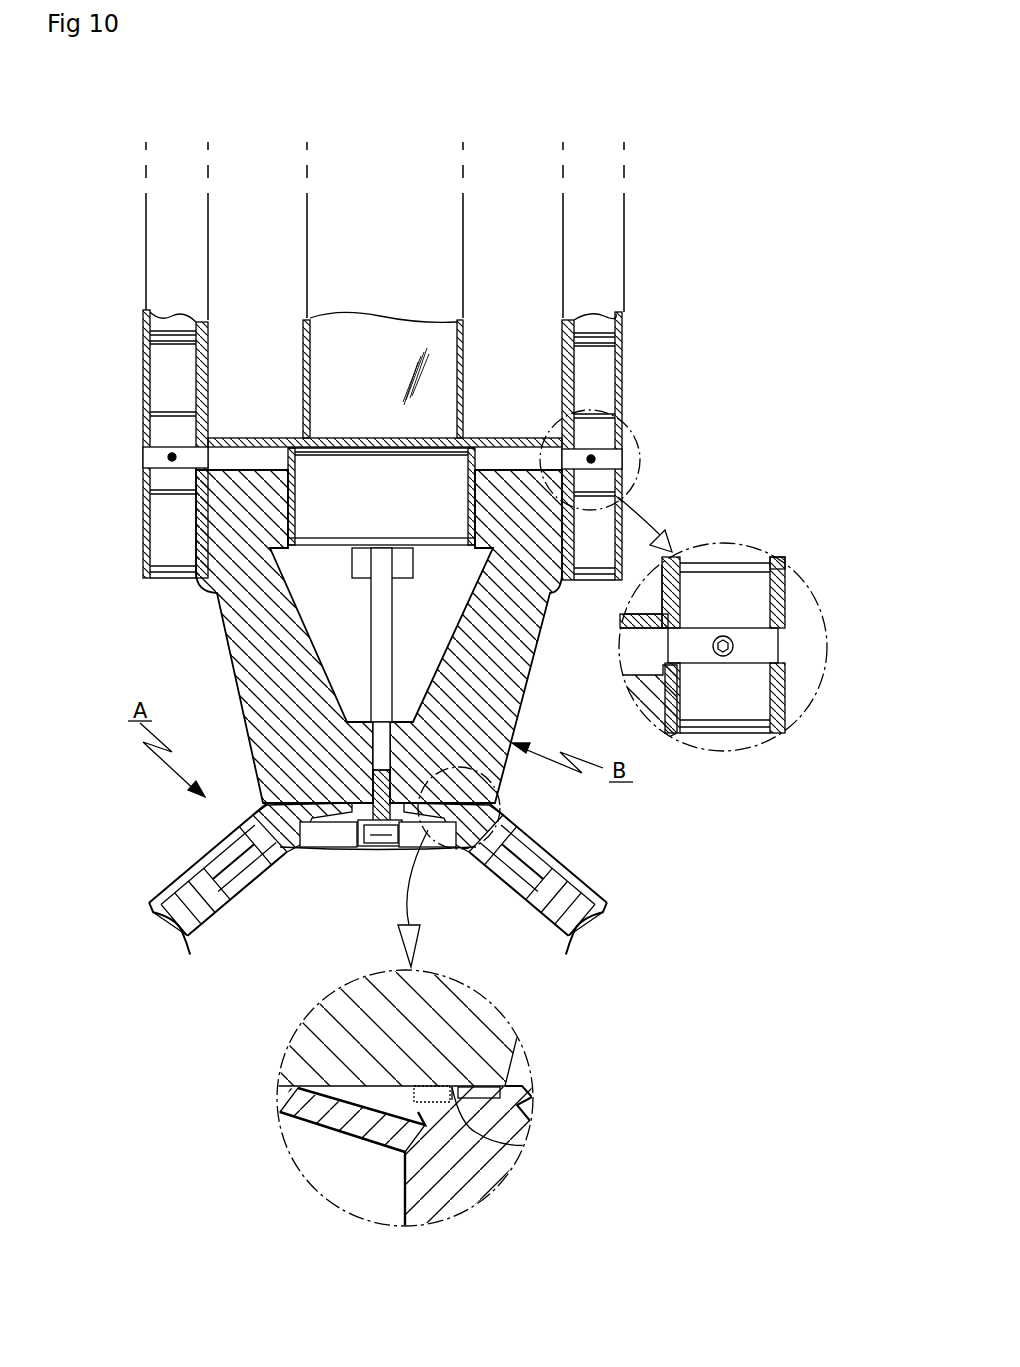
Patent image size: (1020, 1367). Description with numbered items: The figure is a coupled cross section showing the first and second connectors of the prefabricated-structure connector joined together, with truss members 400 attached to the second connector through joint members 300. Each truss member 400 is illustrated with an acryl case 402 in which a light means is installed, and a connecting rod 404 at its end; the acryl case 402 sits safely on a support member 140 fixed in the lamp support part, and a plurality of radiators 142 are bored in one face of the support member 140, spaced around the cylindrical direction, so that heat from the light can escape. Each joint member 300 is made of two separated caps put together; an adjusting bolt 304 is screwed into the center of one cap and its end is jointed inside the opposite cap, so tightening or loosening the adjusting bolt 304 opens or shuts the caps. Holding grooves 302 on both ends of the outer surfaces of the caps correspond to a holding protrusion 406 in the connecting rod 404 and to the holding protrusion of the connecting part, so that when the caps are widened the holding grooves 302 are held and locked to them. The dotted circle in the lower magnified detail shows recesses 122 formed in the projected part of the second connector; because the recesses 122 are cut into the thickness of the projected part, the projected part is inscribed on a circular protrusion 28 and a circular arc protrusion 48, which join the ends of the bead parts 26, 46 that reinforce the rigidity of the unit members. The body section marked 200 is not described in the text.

The truss member 400 is at (620, 266).
The acryl case 402 is at (443, 366).
The joint member 300 is at (150, 361).
The holding groove 302 is at (176, 418).
The adjusting bolt 304 is at (168, 457).
The connecting rod 404 is at (619, 368).
The holding protrusion 406 is at (762, 562).
The support member 140 is at (470, 448).
The radiator 142 is at (312, 455).
The main body 200 is at (370, 830).
The bead part 26 is at (352, 1180).
The bead part 46 is at (382, 1103).
The circular protrusion 28 is at (531, 1121).
The circular arc protrusion 48 is at (458, 1097).
The recess 122 is at (424, 1103).